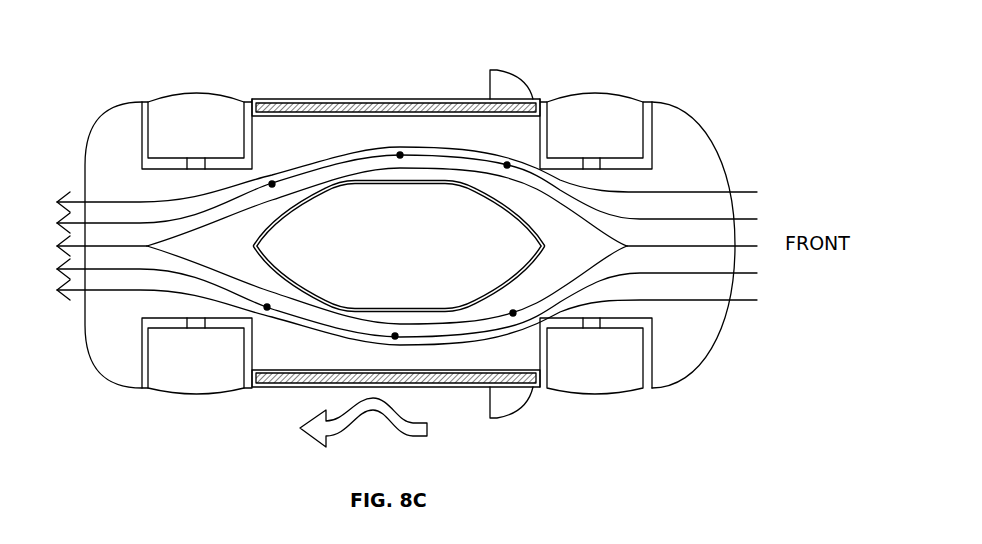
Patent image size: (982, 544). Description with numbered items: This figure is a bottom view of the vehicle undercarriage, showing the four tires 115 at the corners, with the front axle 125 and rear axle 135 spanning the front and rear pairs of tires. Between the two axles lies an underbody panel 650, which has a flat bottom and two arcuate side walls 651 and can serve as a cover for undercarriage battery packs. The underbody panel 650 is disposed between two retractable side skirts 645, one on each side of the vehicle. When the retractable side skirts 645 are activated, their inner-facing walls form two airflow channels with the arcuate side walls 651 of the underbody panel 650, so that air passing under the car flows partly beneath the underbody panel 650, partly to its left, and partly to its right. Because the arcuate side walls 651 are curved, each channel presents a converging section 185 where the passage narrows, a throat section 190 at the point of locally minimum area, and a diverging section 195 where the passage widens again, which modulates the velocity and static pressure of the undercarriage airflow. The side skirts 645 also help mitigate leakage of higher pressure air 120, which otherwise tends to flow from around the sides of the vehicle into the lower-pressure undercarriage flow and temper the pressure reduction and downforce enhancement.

The tires 115 is at (173, 117).
The higher pressure air 120 is at (385, 422).
The front axle 125 is at (603, 165).
The rear axle 135 is at (187, 165).
The converging section 185 is at (507, 165).
The throat section 190 is at (400, 155).
The diverging section 195 is at (272, 184).
The retractable side skirts 645 is at (394, 106).
The underbody panel 650 is at (517, 193).
The arcuate side walls 651 is at (410, 181).